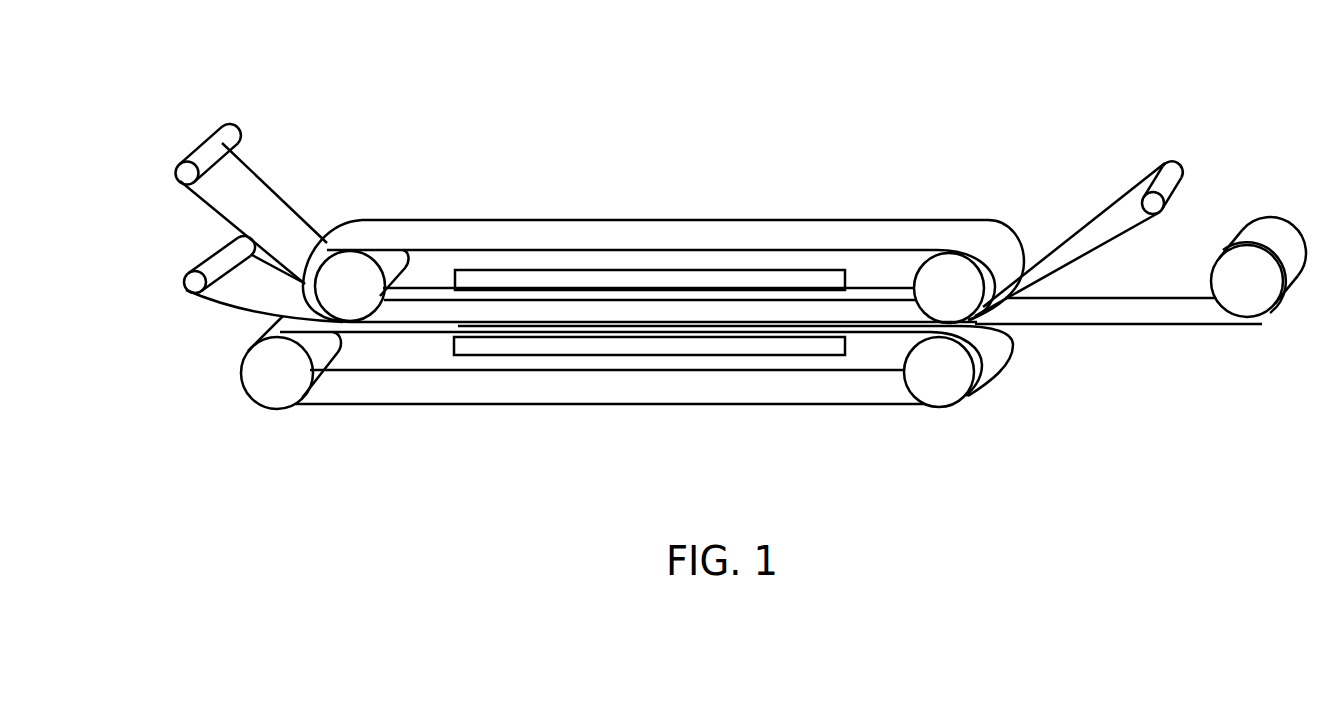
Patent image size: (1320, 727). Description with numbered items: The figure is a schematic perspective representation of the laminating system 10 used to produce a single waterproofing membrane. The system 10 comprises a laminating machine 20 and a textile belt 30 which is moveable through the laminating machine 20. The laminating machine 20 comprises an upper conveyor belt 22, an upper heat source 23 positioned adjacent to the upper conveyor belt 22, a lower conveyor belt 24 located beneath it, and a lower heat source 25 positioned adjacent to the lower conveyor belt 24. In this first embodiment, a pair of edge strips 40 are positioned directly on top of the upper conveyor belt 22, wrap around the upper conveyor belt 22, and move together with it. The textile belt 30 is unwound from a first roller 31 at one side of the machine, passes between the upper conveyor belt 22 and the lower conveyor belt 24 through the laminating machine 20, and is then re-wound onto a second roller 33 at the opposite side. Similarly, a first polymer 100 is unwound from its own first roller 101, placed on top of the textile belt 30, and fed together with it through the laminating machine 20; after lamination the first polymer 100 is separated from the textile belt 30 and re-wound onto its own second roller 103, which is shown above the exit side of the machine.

The system 10 is at (721, 145).
The laminating machine 20 is at (860, 360).
The upper conveyor belt 22 is at (896, 222).
The upper heat source 23 is at (564, 272).
The lower conveyor belt 24 is at (550, 386).
The lower heat source 25 is at (465, 349).
The textile belt 30 is at (217, 292).
The first roller 31 is at (198, 283).
The second roller 33 is at (1253, 300).
The edge strips 40 is at (440, 250).
The first polymer 100 is at (270, 216).
The first roller 101 is at (221, 132).
The second roller 103 is at (1168, 170).